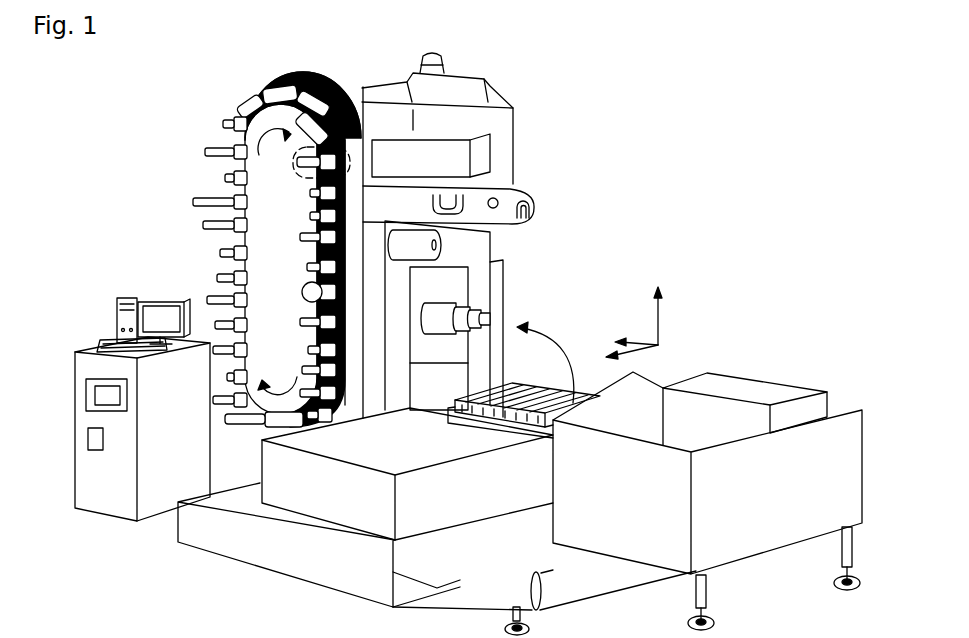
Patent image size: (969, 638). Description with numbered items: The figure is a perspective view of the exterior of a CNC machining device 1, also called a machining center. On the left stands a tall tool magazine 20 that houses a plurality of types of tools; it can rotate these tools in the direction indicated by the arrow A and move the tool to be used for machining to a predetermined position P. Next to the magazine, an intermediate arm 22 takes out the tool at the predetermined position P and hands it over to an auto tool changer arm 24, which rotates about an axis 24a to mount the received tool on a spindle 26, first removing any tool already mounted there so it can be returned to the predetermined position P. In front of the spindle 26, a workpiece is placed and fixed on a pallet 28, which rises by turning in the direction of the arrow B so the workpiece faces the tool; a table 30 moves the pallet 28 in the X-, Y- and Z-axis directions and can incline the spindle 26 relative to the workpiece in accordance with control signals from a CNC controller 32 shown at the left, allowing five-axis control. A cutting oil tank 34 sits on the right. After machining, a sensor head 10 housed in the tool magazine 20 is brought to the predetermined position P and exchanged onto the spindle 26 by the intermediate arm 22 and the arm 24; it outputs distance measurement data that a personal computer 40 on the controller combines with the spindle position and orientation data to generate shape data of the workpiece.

The CNC machining device 1 is at (167, 91).
The sensor head 10 is at (217, 282).
The tool magazine 20 is at (193, 217).
The intermediate arm 22 is at (465, 162).
The auto tool changer (ATC) arm 24 is at (533, 211).
The axis 24a is at (500, 203).
The spindle 26 is at (473, 306).
The pallet 28 is at (527, 392).
The table 30 is at (327, 507).
The CNC controller 32 is at (85, 350).
The cutting oil tank 34 is at (742, 393).
The personal computer 40 is at (129, 300).
The arrow A is at (252, 137).
The arrow B is at (563, 338).
The predetermined position P is at (288, 165).